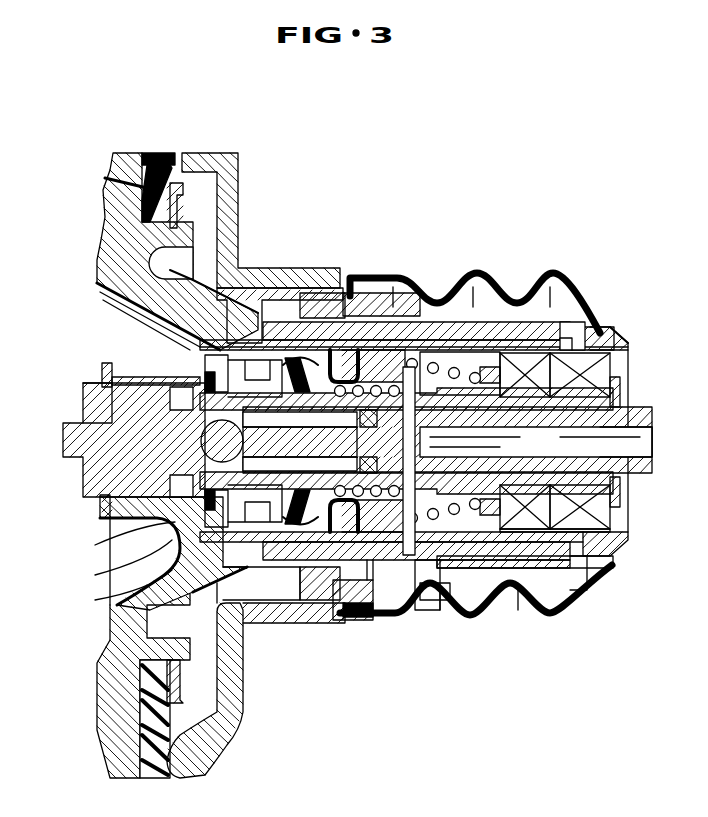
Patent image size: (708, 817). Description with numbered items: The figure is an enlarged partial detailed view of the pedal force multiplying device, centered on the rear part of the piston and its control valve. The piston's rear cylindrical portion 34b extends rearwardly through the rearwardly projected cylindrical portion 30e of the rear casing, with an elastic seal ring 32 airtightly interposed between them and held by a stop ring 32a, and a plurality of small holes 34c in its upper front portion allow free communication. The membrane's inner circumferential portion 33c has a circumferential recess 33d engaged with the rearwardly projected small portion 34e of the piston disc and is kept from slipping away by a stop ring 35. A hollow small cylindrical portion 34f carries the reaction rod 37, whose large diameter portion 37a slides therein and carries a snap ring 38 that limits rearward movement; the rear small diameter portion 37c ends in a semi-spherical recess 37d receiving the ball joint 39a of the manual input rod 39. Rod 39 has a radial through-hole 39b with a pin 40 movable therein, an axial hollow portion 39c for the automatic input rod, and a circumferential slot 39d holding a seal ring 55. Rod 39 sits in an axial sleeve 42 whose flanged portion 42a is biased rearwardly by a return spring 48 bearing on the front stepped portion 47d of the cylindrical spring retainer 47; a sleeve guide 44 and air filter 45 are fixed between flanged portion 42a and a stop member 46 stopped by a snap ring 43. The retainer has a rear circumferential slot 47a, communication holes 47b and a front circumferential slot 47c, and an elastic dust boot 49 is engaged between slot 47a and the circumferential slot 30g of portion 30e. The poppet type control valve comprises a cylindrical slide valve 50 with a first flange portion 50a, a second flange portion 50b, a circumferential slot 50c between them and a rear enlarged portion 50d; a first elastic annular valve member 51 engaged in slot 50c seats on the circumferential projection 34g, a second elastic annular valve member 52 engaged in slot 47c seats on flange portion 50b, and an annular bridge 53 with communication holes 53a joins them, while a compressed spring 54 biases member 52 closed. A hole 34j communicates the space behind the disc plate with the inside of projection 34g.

The rearwardly projected cylindrical portion 30e is at (305, 325).
The circumferential slot 30g is at (363, 320).
The elastic seal ring 32 is at (325, 310).
The stop ring 32a is at (303, 305).
The inner circumferential portion 33c is at (142, 217).
The circumferential recess 33d is at (143, 153).
The rear cylindrical portion 34b is at (600, 340).
The small holes 34c is at (233, 322).
The rearwardly projected small portion 34e is at (130, 180).
The small cylindrical portion 34f is at (125, 530).
The circumferential projection 34g is at (140, 325).
The hole 34j is at (125, 350).
The stop ring 35 is at (178, 182).
The reaction rod 37 is at (77, 483).
The large diameter portion 37a is at (97, 400).
The rear small diameter portion 37c is at (135, 556).
The semi-spherical recess 37d is at (150, 575).
The snap ring 38 is at (100, 510).
The manual input rod 39 is at (310, 622).
The ball joint 39a is at (213, 443).
The radial through-hole 39b is at (420, 598).
The axial hollow portion 39c is at (628, 412).
The circumferential slot 39d is at (430, 385).
The pin 40 is at (505, 585).
The axial sleeve 42 is at (595, 553).
The circumferential flanged portion 42a is at (525, 566).
The snap ring 43 is at (627, 485).
The sleeve guide 44 is at (560, 530).
The air filter 45 is at (580, 540).
The stop member 46 is at (617, 507).
The cylindrical spring retainer 47 is at (655, 313).
The circumferential slot 47a is at (622, 330).
The communication holes 47b is at (578, 342).
The circumferential slot 47c is at (395, 318).
The front stepped portion 47d is at (400, 375).
The return spring 48 is at (505, 310).
The elastic dust boot 49 is at (573, 345).
The cylindrical slide valve 50 is at (322, 600).
The first flange portion 50a is at (215, 600).
The second flange portion 50b is at (292, 622).
The circumferential slot 50c is at (253, 624).
The rear enlarged portion 50d is at (432, 600).
The first elastic annular valve member 51 is at (213, 288).
The second elastic annular valve member 52 is at (334, 300).
The annular bridge 53 is at (287, 355).
The communication holes 53a is at (300, 442).
The compressed spring 54 is at (410, 560).
The seal ring 55 is at (370, 590).